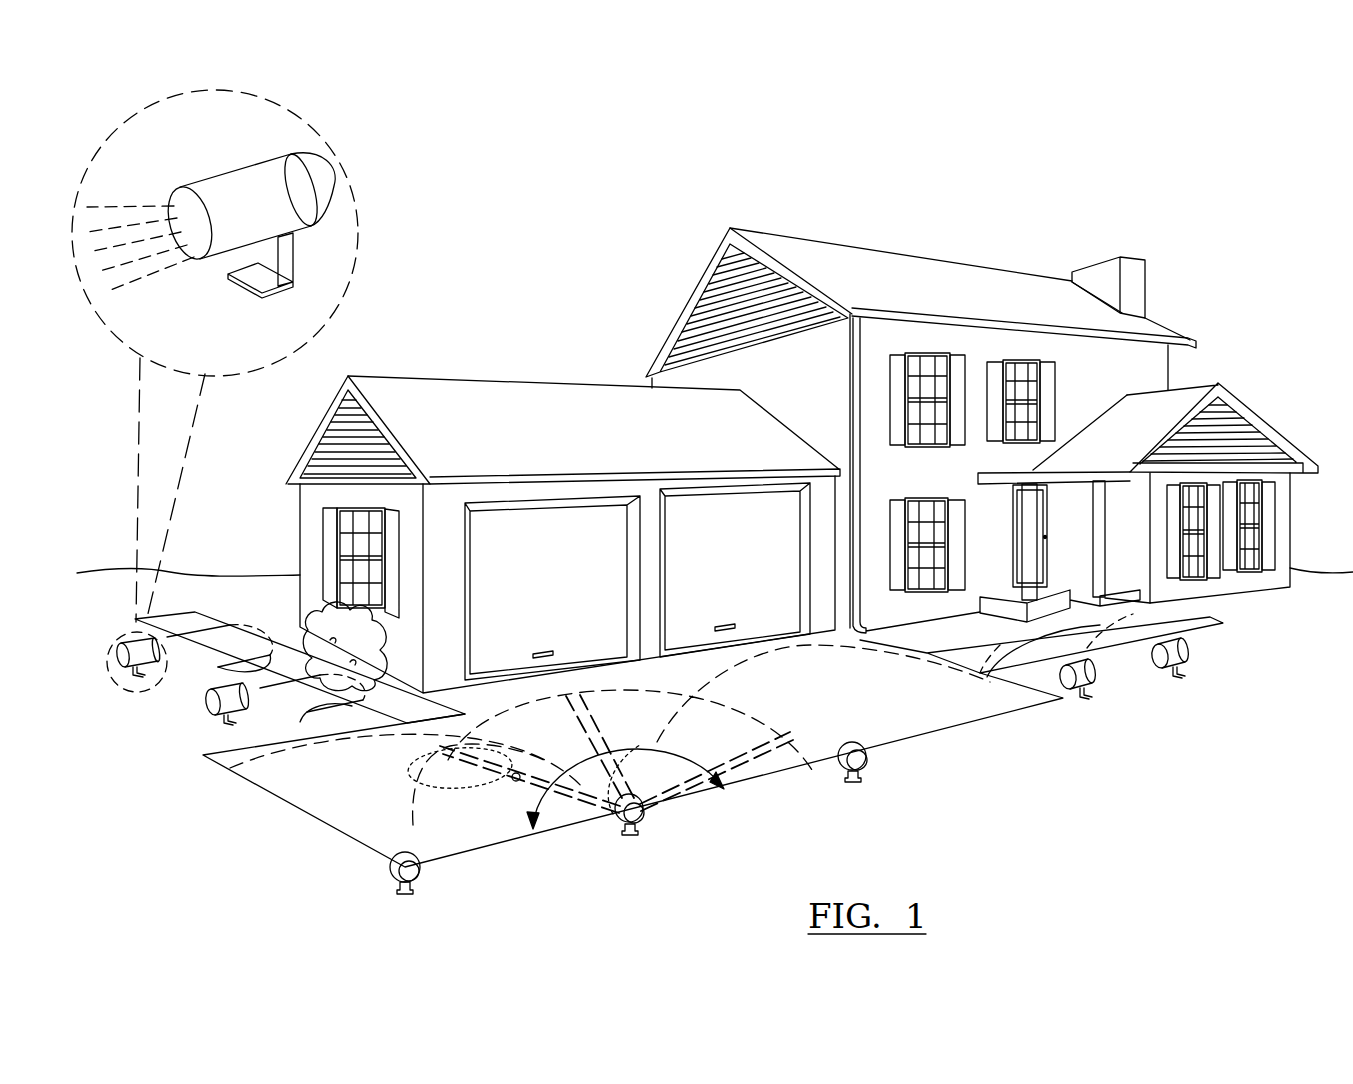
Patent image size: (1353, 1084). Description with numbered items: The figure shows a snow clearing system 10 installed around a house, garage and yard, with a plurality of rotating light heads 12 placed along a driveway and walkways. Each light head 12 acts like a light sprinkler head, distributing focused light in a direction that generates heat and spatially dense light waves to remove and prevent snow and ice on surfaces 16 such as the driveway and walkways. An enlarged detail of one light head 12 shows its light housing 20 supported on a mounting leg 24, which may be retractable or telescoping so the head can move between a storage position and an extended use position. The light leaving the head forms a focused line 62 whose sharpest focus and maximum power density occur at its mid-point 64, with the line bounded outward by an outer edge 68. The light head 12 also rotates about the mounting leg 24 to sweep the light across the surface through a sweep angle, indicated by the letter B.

The snow clearing system 10 is at (535, 205).
The rotating light head 12 is at (222, 182).
The surface 16 is at (337, 709).
The light housing 20 is at (288, 203).
The mounting leg 24 is at (283, 271).
The focused line 62 is at (164, 200).
The mid-point 64 is at (513, 781).
The outer edge 68 is at (410, 760).